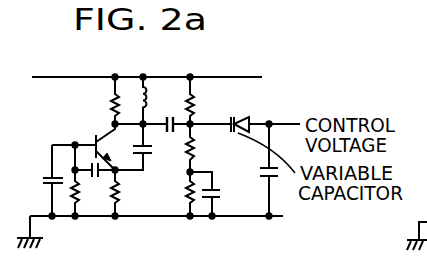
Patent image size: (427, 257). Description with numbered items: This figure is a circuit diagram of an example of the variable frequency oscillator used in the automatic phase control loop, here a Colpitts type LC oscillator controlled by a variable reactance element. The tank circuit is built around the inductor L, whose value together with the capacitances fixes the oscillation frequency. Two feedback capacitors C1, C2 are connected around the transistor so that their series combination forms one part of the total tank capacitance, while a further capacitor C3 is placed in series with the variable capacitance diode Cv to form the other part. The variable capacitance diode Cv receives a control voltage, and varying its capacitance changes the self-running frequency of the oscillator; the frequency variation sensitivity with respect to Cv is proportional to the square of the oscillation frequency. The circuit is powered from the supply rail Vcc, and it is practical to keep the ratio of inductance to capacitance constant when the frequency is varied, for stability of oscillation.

The supply voltage rail Vcc is at (160, 63).
The inductor L is at (140, 88).
The capacitor C3 is at (169, 109).
The capacitor C1 is at (146, 150).
The capacitor C2 is at (95, 186).
The variable capacitance diode Cv is at (260, 107).